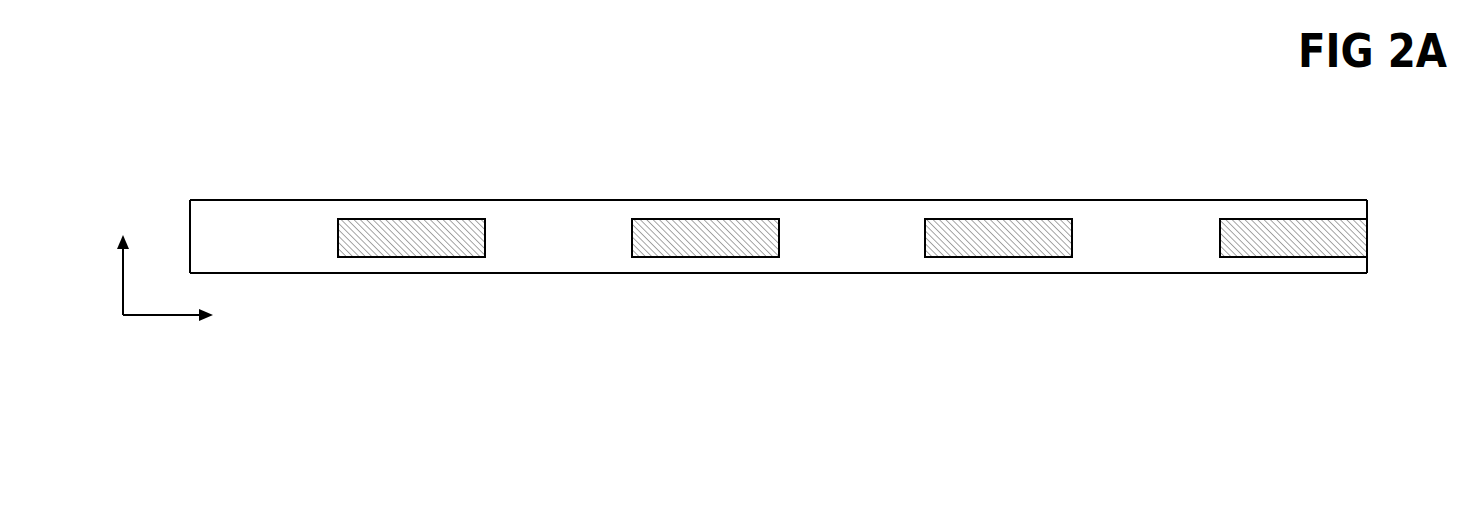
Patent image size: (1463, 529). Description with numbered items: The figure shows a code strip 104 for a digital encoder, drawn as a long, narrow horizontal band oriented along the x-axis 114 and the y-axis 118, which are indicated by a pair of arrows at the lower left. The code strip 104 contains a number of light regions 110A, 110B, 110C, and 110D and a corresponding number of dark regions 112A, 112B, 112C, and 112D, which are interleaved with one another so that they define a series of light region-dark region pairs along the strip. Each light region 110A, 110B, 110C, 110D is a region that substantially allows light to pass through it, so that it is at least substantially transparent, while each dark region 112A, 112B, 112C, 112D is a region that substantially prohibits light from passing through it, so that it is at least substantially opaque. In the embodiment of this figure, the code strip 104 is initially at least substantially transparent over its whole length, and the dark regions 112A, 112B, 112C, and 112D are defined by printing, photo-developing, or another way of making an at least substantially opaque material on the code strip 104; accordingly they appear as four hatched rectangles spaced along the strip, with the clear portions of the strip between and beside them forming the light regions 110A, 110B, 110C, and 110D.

The code strip 104 is at (1367, 233).
The light region 110A is at (262, 232).
The light region 110B is at (551, 231).
The light region 110C is at (850, 231).
The light region 110D is at (1146, 231).
The dark region 112A is at (411, 238).
The dark region 112B is at (705, 238).
The dark region 112C is at (998, 238).
The dark region 112D is at (1293, 238).
The x-axis 114 is at (167, 318).
The y-axis 118 is at (172, 218).